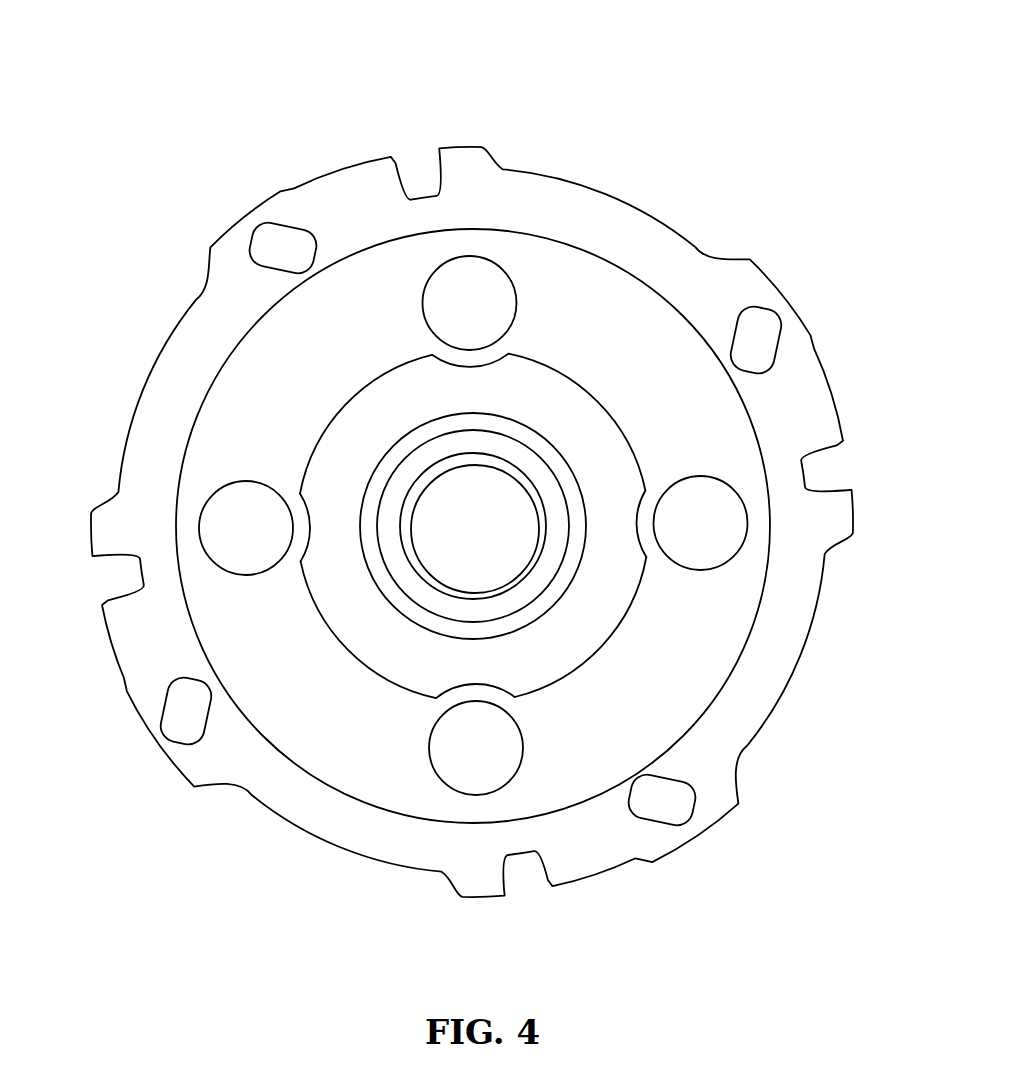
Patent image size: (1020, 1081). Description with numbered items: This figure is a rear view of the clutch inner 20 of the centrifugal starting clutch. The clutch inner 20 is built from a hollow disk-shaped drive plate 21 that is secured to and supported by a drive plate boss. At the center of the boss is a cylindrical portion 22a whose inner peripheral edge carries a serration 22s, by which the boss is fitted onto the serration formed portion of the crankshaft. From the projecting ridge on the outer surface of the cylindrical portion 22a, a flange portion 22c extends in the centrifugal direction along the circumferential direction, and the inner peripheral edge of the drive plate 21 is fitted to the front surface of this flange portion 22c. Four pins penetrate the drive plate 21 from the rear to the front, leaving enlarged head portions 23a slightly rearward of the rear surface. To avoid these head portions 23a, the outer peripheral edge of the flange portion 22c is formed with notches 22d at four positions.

The clutch inner 20 is at (474, 100).
The drive plate 21 is at (192, 309).
The cylindrical portion 22a is at (575, 470).
The flange portion 22c is at (590, 385).
The notch 22d is at (495, 357).
The serration 22s is at (460, 590).
The head portion 23a is at (458, 292).